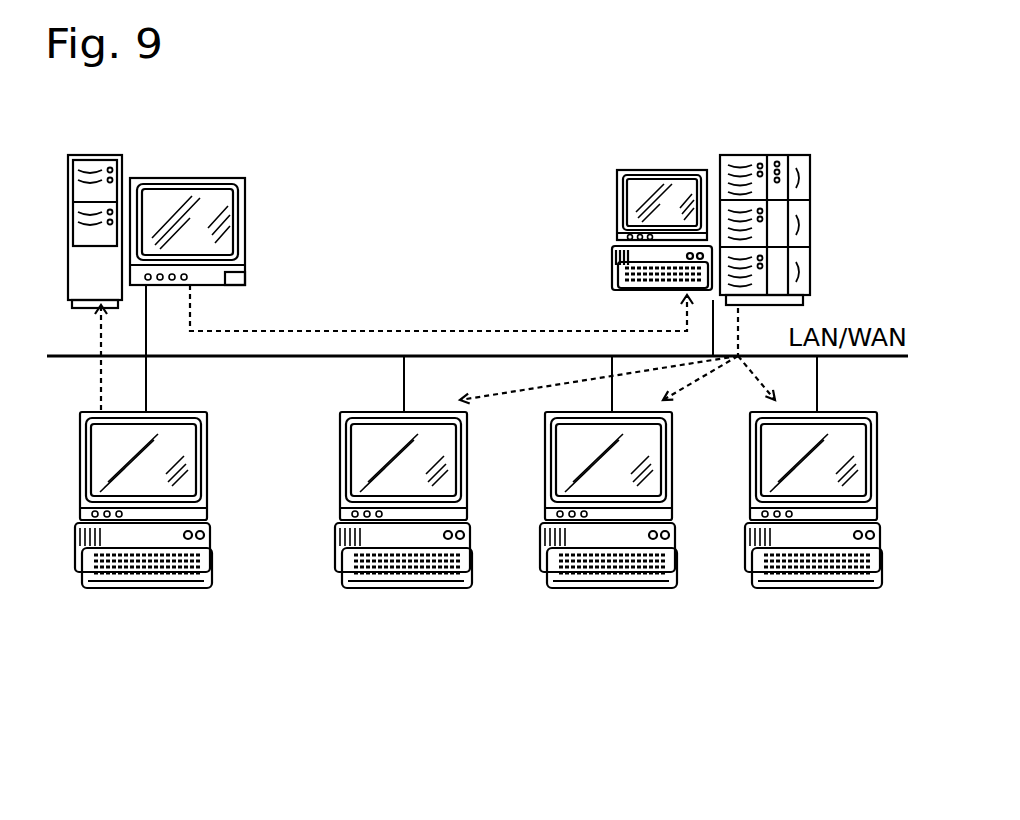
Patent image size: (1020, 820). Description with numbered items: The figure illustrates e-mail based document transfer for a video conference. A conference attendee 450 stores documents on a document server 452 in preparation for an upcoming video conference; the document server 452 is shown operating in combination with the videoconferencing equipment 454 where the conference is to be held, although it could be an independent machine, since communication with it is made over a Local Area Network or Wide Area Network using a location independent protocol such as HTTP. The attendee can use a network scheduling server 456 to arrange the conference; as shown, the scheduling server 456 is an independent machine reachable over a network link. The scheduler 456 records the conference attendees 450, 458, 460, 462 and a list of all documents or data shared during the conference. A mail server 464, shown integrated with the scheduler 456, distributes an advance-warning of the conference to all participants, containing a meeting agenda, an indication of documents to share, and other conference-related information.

The conference attendee 450 is at (107, 643).
The document server 452 is at (357, 138).
The videoconferencing equipment 454 is at (397, 85).
The network scheduling server 456 is at (563, 137).
The conference attendee 458 is at (368, 643).
The conference attendee 460 is at (573, 643).
The conference attendee 462 is at (777, 643).
The mail server 464 is at (617, 84).